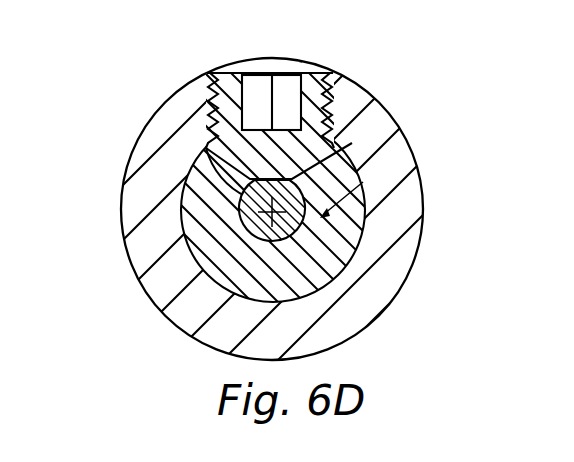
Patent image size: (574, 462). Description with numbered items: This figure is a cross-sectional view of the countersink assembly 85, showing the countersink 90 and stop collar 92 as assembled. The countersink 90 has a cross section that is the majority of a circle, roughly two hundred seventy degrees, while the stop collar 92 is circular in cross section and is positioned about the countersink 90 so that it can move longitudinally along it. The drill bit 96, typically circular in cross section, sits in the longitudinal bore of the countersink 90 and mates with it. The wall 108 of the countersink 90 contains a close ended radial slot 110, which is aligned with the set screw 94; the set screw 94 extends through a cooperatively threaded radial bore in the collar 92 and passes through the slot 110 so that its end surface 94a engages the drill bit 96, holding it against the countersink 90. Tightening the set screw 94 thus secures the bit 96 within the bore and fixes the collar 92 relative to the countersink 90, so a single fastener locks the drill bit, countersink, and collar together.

The countersink assembly 85 is at (287, 231).
The countersink 90 is at (410, 215).
The stop collar 92 is at (384, 278).
The set screw 94 is at (312, 100).
The end surface 94a is at (186, 170).
The drill bit 96 is at (357, 250).
The outer wall 108 is at (193, 222).
The close ended radial slot 110 is at (360, 184).